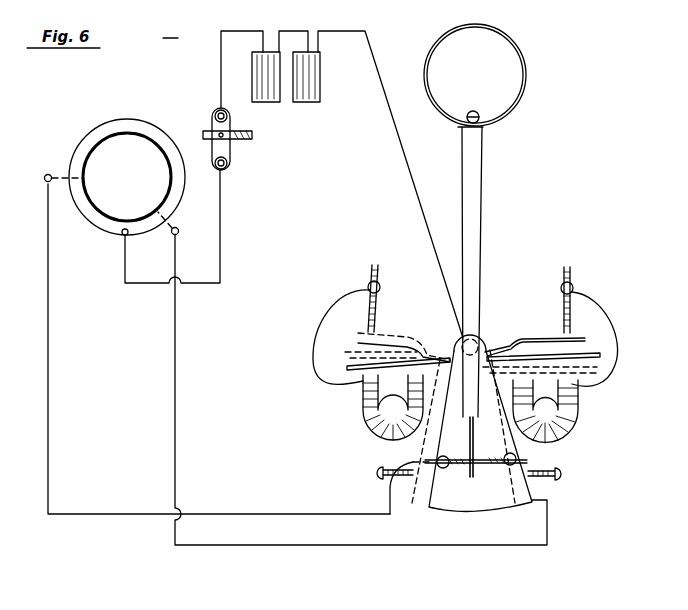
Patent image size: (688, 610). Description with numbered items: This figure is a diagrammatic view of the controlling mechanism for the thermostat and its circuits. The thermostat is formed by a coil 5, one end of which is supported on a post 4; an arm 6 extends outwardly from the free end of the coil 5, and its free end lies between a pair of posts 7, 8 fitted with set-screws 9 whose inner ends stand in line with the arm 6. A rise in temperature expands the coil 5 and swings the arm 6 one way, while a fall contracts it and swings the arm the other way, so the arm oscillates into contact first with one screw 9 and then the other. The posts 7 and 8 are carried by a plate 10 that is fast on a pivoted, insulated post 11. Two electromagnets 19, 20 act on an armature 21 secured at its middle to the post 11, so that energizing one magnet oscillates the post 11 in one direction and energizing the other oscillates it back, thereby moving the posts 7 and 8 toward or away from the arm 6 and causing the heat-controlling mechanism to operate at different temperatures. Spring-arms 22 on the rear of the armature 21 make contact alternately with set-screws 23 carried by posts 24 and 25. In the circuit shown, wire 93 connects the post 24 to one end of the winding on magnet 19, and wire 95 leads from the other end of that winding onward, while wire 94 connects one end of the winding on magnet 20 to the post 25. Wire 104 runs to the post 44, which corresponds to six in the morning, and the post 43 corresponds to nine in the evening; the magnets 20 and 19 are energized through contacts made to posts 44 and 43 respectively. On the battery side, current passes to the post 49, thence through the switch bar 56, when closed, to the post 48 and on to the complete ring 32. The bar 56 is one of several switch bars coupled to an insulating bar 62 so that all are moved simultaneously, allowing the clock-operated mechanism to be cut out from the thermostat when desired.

The post 4 is at (478, 111).
The coil 5 is at (509, 38).
The arm 6 is at (483, 160).
The post 7 is at (443, 467).
The post 8 is at (508, 464).
The set-screw 9 is at (455, 467).
The plate 10 is at (461, 432).
The post 11 is at (488, 338).
The electromagnet 19 is at (579, 422).
The electromagnet 20 is at (364, 418).
The armature 21 is at (430, 353).
The spring-arm 22 is at (400, 343).
The set-screw 23 is at (378, 270).
The post 24 is at (574, 291).
The post 25 is at (370, 283).
The ring 32 is at (136, 114).
The post 43 is at (179, 226).
The post 44 is at (59, 168).
The post 48 is at (226, 168).
The post 49 is at (215, 112).
The bar 56 is at (226, 150).
The bar 62 is at (244, 134).
The wire 93 is at (606, 339).
The wire 94 is at (325, 337).
The wire 95 is at (414, 545).
The wire 104 is at (48, 399).